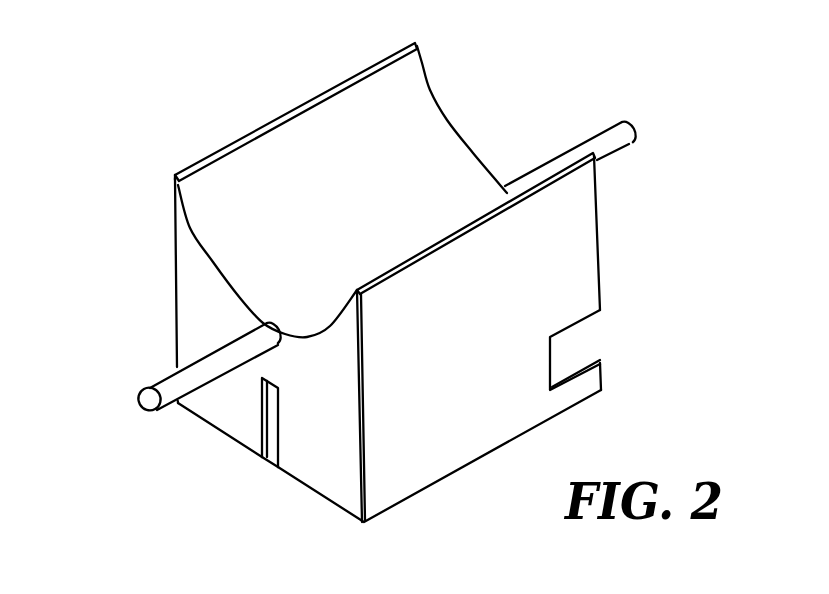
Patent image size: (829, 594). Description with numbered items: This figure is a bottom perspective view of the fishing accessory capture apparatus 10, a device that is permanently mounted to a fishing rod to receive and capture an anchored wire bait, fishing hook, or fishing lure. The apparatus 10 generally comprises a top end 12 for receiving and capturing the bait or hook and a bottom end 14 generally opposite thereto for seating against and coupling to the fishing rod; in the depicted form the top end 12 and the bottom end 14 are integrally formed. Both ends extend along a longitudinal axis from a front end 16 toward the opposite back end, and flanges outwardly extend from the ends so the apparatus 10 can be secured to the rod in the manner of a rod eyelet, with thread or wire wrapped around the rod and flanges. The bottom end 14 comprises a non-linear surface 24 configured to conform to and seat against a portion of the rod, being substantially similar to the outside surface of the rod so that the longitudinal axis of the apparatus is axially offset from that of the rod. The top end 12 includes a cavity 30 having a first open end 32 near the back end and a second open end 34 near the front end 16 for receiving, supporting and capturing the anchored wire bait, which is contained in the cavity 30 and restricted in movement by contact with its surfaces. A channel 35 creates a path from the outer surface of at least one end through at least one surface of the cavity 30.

The fishing accessory capture apparatus 10 is at (78, 117).
The top end 12 is at (427, 515).
The bottom end 14 is at (263, 92).
The front end 16 is at (158, 249).
The non-linear surface 24 is at (407, 70).
The cavity 30 is at (560, 347).
The first open end 32 is at (637, 347).
The second open end 34 is at (250, 403).
The channel 35 is at (263, 478).